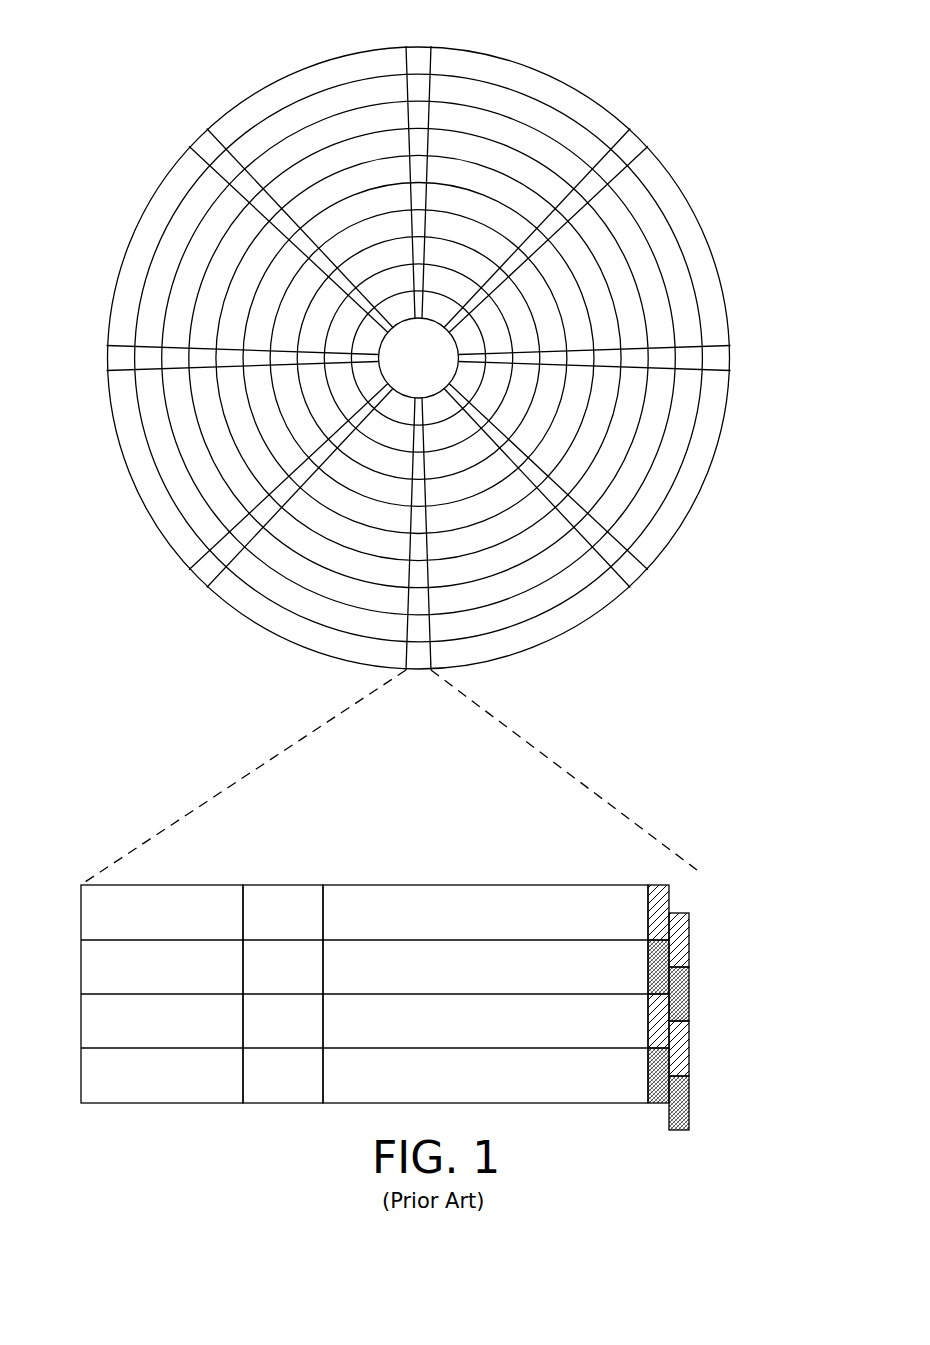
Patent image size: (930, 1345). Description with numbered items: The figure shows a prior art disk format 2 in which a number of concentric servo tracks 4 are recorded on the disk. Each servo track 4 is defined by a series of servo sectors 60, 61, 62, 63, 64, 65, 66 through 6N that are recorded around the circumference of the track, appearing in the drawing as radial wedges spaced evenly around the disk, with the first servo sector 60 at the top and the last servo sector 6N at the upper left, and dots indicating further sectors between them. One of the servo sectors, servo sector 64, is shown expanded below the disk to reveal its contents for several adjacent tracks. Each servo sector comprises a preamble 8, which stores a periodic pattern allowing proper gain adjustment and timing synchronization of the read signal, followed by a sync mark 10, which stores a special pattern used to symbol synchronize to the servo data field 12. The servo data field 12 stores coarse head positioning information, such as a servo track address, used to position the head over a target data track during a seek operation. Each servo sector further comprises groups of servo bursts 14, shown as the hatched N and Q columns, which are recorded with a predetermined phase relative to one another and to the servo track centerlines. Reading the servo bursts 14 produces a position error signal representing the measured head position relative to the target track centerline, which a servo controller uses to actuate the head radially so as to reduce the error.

The disk format 2 is at (186, 50).
The servo track 4 is at (525, 110).
The servo sector 60 is at (419, 58).
The servo sector 61 is at (630, 146).
The servo sector 62 is at (721, 358).
The servo sector 63 is at (632, 570).
The servo sector 64 is at (282, 744).
The servo sector 65 is at (203, 573).
The servo sector 66 is at (110, 357).
The servo sector 6N is at (207, 146).
The preamble 8 is at (170, 885).
The sync mark 10 is at (285, 885).
The servo data field 12 is at (474, 885).
The servo bursts 14 is at (686, 883).